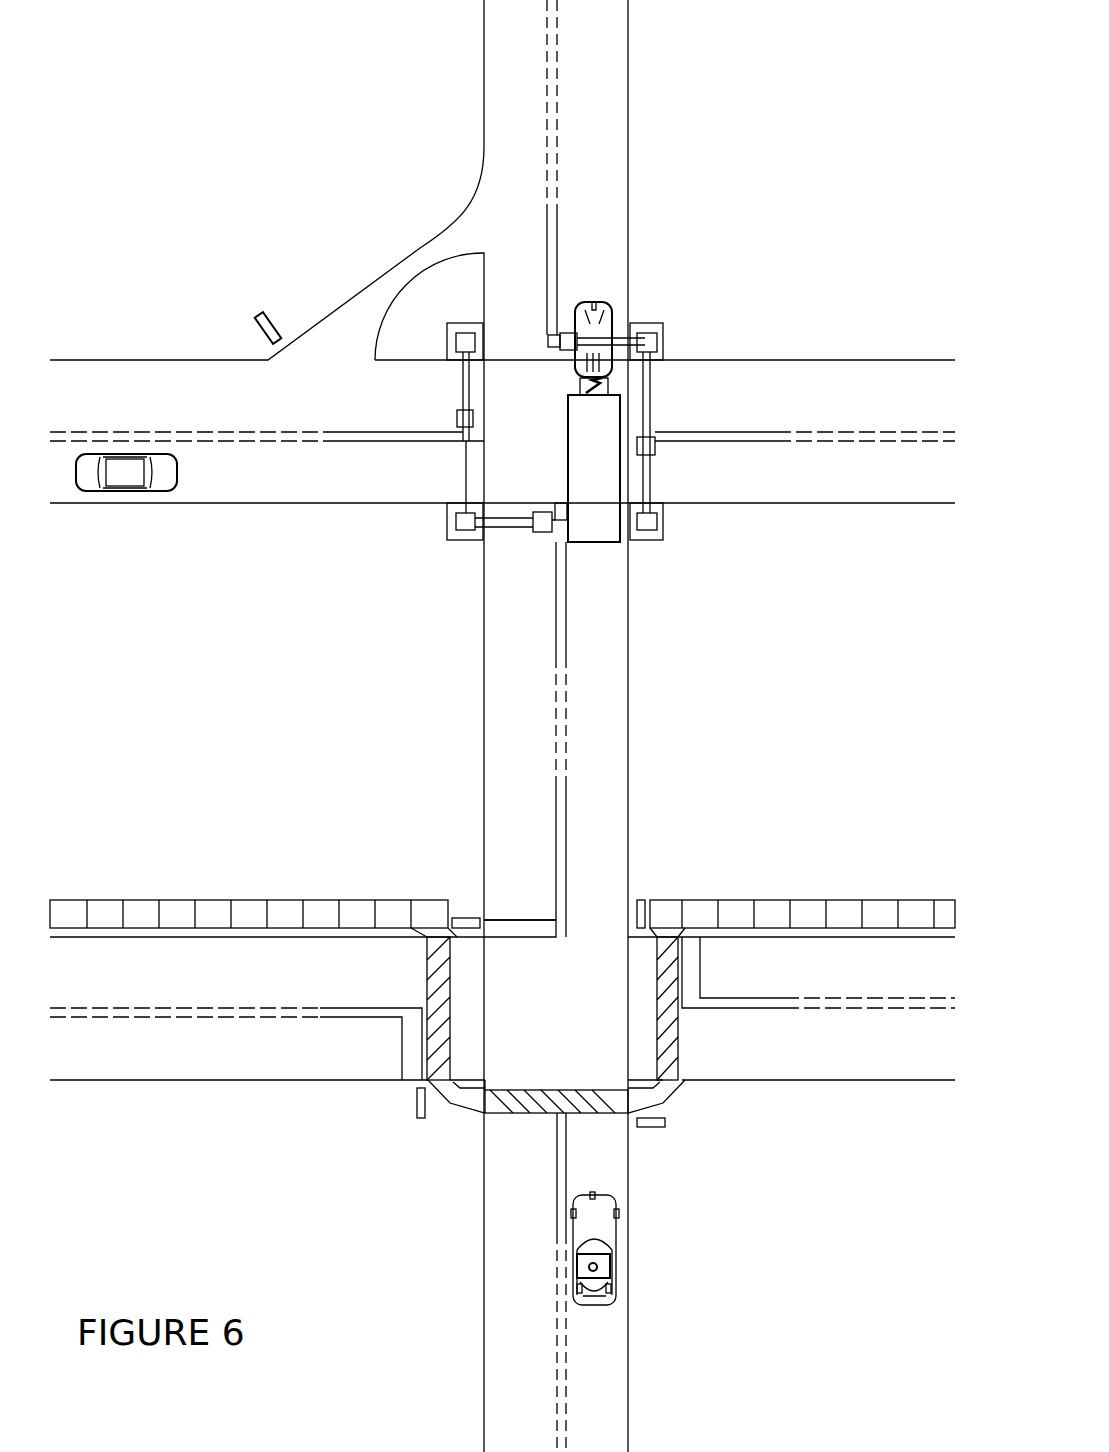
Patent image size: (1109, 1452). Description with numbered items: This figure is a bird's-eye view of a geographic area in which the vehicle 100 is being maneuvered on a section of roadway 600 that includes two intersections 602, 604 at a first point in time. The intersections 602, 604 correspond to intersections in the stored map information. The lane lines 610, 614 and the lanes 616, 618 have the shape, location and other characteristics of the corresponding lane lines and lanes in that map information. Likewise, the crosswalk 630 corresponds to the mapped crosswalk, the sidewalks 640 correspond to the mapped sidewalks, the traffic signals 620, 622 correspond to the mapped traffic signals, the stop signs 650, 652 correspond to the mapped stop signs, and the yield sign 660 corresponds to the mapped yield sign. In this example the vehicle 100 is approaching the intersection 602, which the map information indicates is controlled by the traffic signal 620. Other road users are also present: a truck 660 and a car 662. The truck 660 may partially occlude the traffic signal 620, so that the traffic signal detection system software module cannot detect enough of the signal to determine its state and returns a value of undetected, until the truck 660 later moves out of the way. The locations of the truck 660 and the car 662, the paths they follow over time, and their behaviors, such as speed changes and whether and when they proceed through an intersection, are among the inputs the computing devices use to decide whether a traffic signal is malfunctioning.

The vehicle 100 is at (613, 1255).
The roadway 600 is at (180, 1291).
The intersection 602 is at (555, 431).
The intersection 604 is at (548, 1020).
The lane line 610 is at (483, 698).
The lane line 614 is at (628, 580).
The lane 616 is at (177, 1180).
The lane 618 is at (520, 769).
The traffic signal 620 is at (551, 335).
The traffic signal 622 is at (535, 535).
The crosswalk 630 is at (486, 1097).
The sidewalks 640 is at (728, 900).
The stop sign 650 is at (466, 916).
The stop sign 652 is at (665, 1125).
The truck 660 is at (246, 330).
The car 662 is at (180, 472).